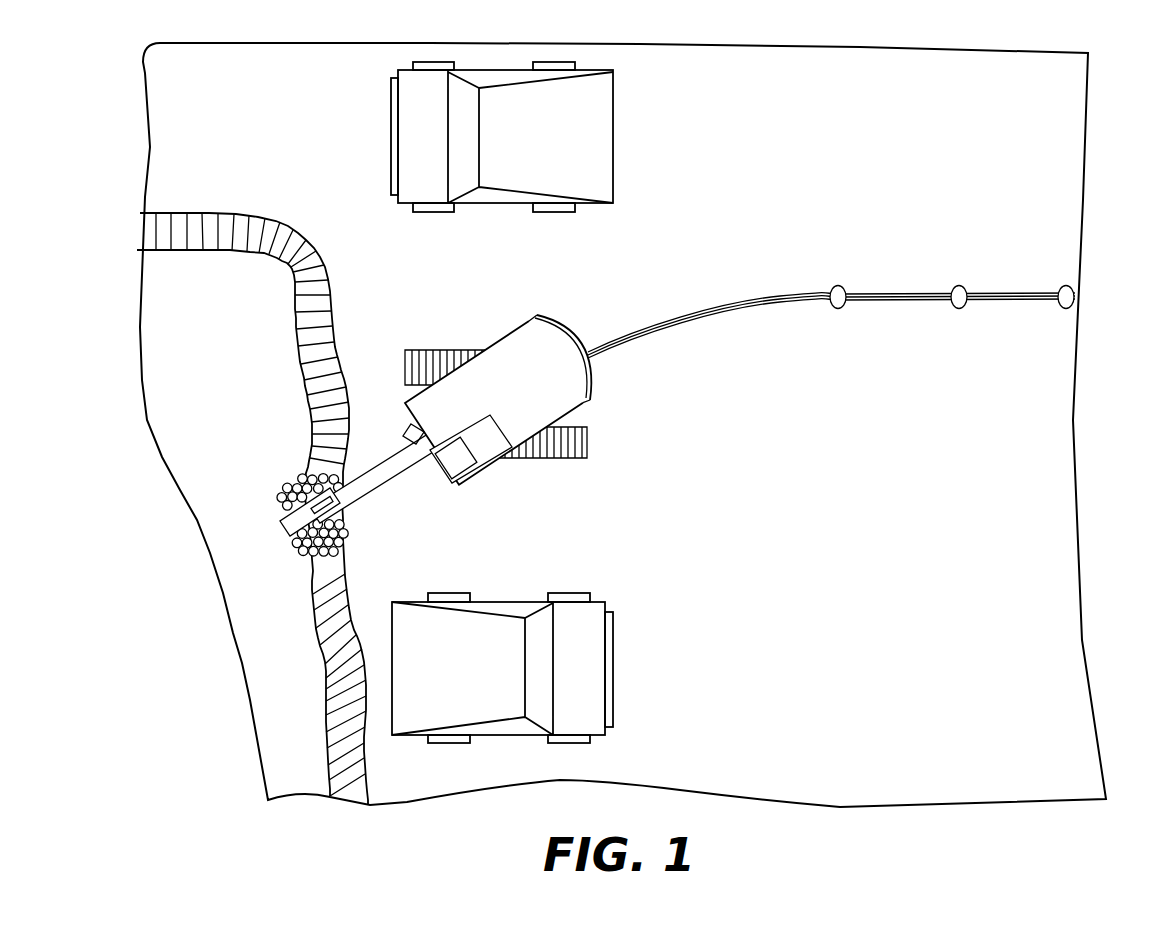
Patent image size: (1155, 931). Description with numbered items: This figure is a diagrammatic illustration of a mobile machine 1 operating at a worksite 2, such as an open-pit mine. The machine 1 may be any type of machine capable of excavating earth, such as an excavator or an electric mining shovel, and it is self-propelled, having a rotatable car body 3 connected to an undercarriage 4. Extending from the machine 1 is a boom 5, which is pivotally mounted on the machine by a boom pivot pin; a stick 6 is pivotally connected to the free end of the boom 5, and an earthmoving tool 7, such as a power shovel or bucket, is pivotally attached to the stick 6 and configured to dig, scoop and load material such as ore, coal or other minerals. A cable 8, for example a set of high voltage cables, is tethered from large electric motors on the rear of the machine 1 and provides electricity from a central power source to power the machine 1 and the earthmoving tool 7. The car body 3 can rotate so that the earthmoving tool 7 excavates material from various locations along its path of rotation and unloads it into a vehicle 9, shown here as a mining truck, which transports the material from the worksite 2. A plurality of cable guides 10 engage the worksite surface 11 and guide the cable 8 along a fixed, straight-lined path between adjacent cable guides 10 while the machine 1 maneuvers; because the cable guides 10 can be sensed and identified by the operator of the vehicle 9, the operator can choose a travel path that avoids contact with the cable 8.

The mobile machine 1 is at (495, 414).
The worksite 2 is at (1004, 128).
The rotatable car body 3 is at (518, 340).
The undercarriage 4 is at (587, 440).
The boom 5 is at (393, 468).
The stick 6 is at (337, 500).
The earthmoving tool 7 is at (287, 535).
The cable 8 is at (745, 298).
The vehicle 9 is at (362, 124).
The cable guides 10 is at (1066, 287).
The worksite surface 11 is at (958, 403).